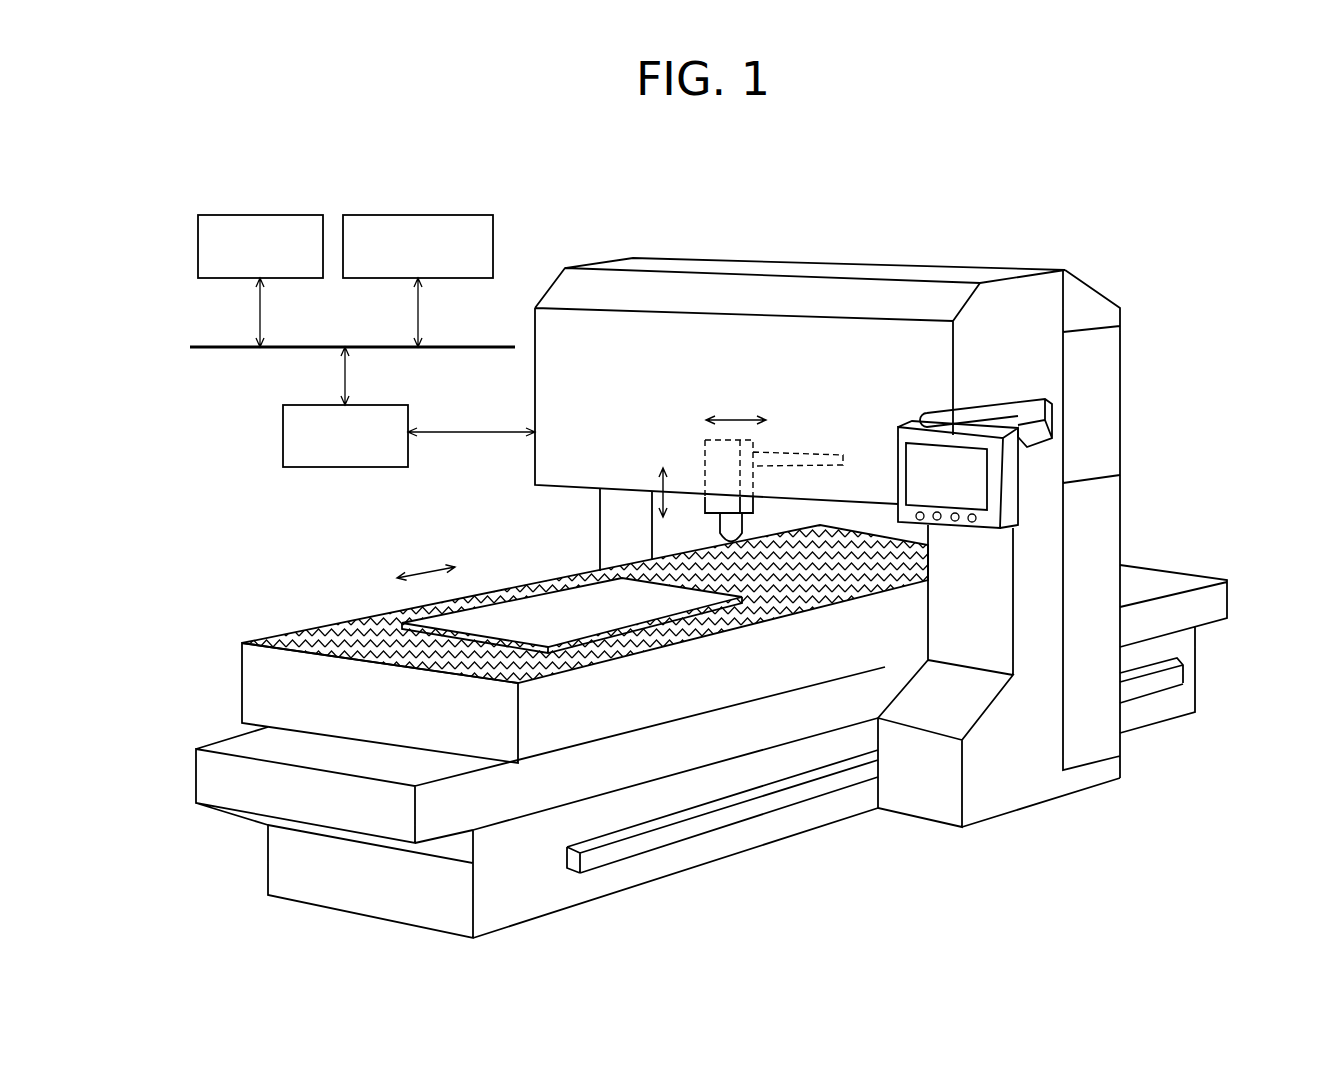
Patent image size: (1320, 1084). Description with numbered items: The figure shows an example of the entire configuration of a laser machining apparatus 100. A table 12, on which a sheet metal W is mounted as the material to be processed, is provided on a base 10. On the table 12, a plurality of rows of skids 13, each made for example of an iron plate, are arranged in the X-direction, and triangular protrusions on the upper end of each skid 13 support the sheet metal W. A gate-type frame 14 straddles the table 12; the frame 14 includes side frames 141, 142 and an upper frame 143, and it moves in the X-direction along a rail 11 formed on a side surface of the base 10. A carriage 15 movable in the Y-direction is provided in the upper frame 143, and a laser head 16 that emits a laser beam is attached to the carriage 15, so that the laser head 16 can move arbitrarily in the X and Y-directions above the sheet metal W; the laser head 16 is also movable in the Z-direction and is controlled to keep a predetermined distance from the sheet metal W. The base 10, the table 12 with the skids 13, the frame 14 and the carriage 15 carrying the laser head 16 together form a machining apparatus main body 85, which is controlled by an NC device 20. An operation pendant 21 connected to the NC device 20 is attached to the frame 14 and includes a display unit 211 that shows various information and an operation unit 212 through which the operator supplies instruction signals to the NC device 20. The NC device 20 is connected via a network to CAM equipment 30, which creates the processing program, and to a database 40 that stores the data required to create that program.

The laser machining apparatus 100 is at (843, 240).
The base 10 is at (660, 868).
The rail 11 is at (787, 797).
The table 12 is at (242, 687).
The skids 13 is at (358, 630).
The gate-type frame 14 is at (1120, 357).
The side frame 141 is at (1120, 510).
The side frame 142 is at (600, 506).
The upper frame 143 is at (535, 381).
The carriage 15 is at (705, 457).
The laser head 16 is at (740, 530).
The NC device 20 is at (283, 428).
The operation pendant 21 is at (973, 497).
The display unit 211 is at (922, 452).
The operation unit 212 is at (1000, 526).
The CAM equipment 30 is at (250, 213).
The database 40 is at (420, 213).
The machining apparatus main body 85 is at (1145, 440).
The sheet metal W is at (490, 610).